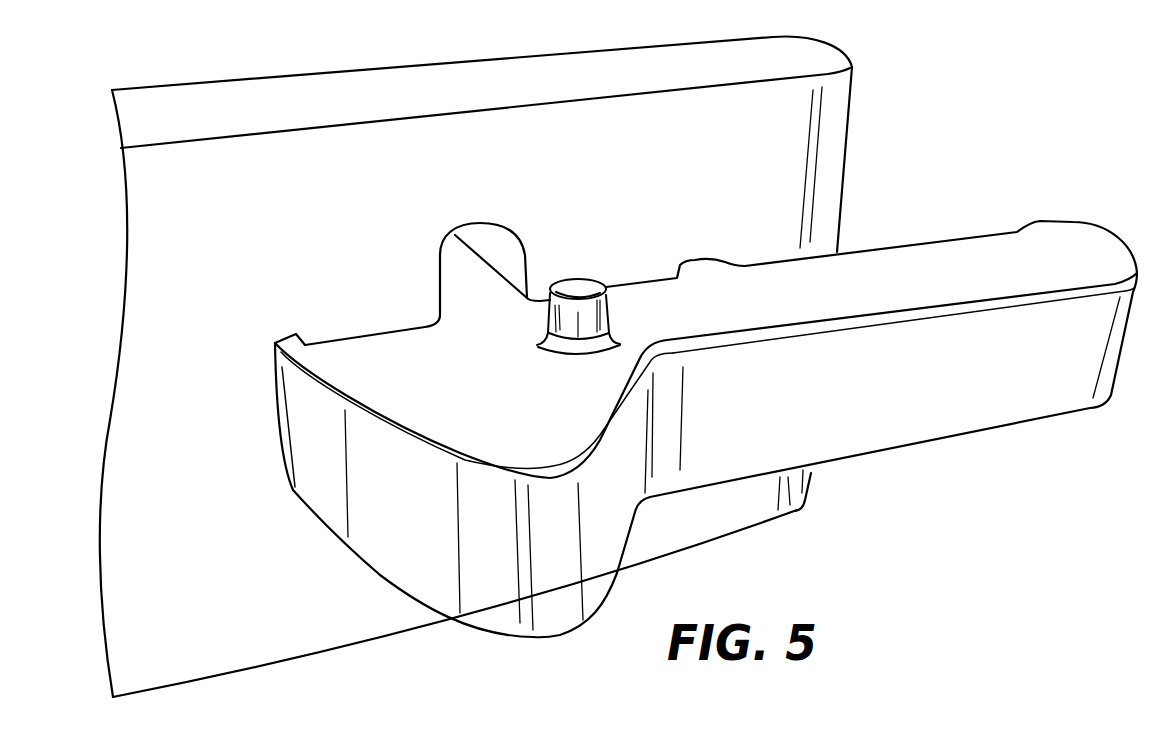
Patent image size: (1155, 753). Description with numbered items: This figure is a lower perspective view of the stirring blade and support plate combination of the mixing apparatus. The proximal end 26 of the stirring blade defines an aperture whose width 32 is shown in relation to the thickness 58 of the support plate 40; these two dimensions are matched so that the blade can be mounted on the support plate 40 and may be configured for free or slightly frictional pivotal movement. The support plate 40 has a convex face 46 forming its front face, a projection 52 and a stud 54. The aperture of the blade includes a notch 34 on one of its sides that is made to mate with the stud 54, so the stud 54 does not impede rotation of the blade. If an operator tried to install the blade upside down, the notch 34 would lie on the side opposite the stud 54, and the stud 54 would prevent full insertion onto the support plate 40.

The proximal end 26 is at (833, 118).
The width 32 is at (297, 418).
The notch 34 is at (527, 265).
The support plate 40 is at (1005, 198).
The convex face 46 is at (480, 588).
The projection 52 is at (1002, 405).
The stud 54 is at (608, 283).
The thickness 58 is at (903, 322).